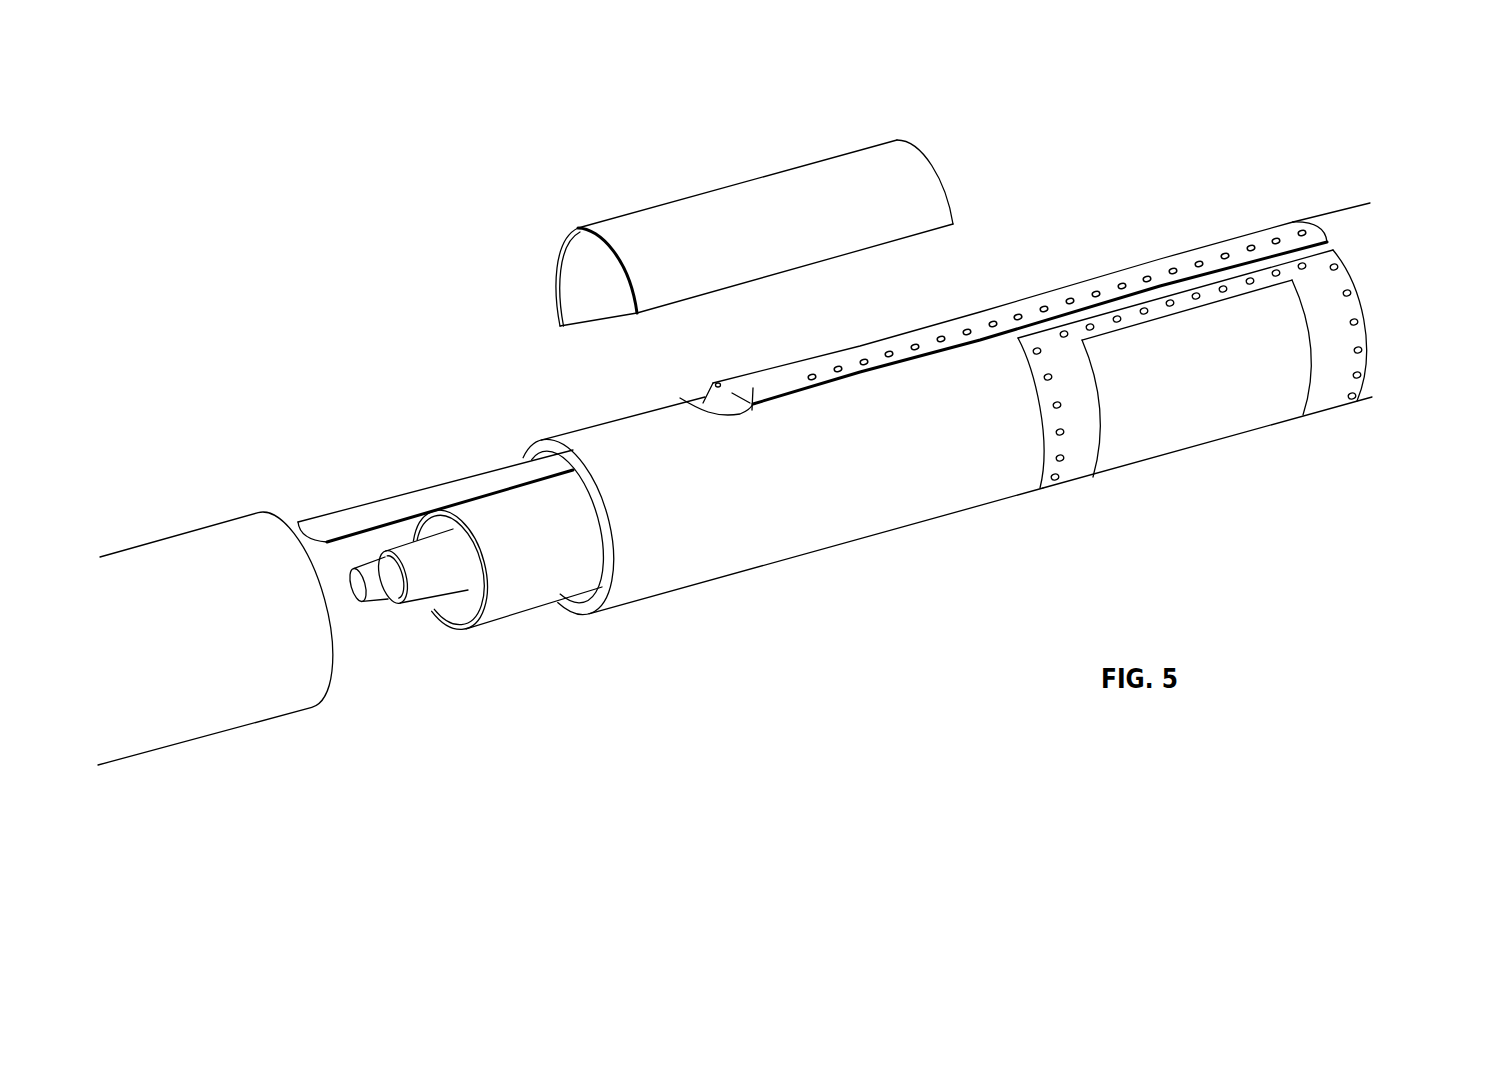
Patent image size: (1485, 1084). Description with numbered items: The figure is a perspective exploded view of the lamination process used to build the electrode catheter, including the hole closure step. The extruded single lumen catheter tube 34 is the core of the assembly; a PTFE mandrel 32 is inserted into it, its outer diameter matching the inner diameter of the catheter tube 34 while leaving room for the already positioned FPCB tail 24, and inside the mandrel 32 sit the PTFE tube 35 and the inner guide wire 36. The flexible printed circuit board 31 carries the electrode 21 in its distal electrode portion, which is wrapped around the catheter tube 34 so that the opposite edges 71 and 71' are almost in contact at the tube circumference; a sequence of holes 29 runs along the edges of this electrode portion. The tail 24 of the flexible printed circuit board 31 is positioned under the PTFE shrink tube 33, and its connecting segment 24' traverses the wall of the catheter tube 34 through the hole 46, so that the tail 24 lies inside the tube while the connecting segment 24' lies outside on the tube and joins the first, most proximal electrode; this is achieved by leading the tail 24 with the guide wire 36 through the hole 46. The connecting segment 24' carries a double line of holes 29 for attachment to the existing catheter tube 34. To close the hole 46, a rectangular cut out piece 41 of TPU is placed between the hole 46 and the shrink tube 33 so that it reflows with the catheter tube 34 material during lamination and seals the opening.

The electrode 21 is at (1200, 410).
The FPCB tail 24 is at (428, 457).
The connecting segment 24' is at (1020, 427).
The holes 29 is at (1049, 312).
The flexible printed circuit board 31 is at (1163, 277).
The PTFE mandrel 32 is at (532, 552).
The PTFE shrink tube 33 is at (228, 550).
The catheter tube 34 is at (677, 543).
The PTFE tube 35 is at (429, 573).
The inner guide wire 36 is at (363, 590).
The cut out piece 41 is at (677, 248).
The hole 46 is at (700, 400).
The edge 71 is at (1402, 313).
The opposite edge 71' is at (1331, 162).